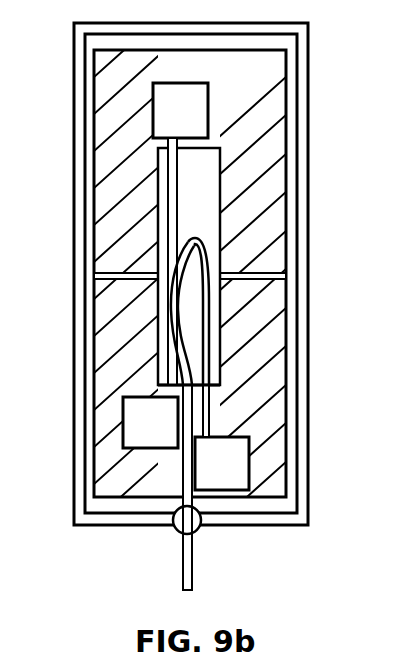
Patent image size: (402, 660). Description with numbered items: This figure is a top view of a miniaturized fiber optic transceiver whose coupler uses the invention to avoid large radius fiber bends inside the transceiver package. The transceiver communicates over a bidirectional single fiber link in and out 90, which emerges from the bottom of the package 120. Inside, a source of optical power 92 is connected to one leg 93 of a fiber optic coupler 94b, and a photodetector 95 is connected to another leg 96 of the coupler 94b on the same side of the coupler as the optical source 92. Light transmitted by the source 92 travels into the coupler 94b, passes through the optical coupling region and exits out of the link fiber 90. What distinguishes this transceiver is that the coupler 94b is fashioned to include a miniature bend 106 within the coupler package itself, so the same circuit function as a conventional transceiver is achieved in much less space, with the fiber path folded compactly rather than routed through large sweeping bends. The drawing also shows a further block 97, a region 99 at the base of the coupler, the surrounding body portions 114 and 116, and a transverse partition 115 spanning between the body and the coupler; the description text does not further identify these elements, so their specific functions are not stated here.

The bidirectional single fiber link 90 is at (192, 560).
The source of optical power 92 is at (166, 104).
The leg of fiber optic coupler 93 is at (170, 145).
The fiber optic coupler 94b is at (200, 168).
The photodetector 95 is at (230, 463).
The leg of coupler 96 is at (220, 402).
The lower left block 97 is at (142, 432).
The channel bottom 99 is at (162, 388).
The miniature bend 106 is at (185, 243).
The upper body section 114 is at (263, 98).
The partition plate 115 is at (100, 277).
The lower body section 116 is at (253, 313).
The housing 120 is at (300, 356).